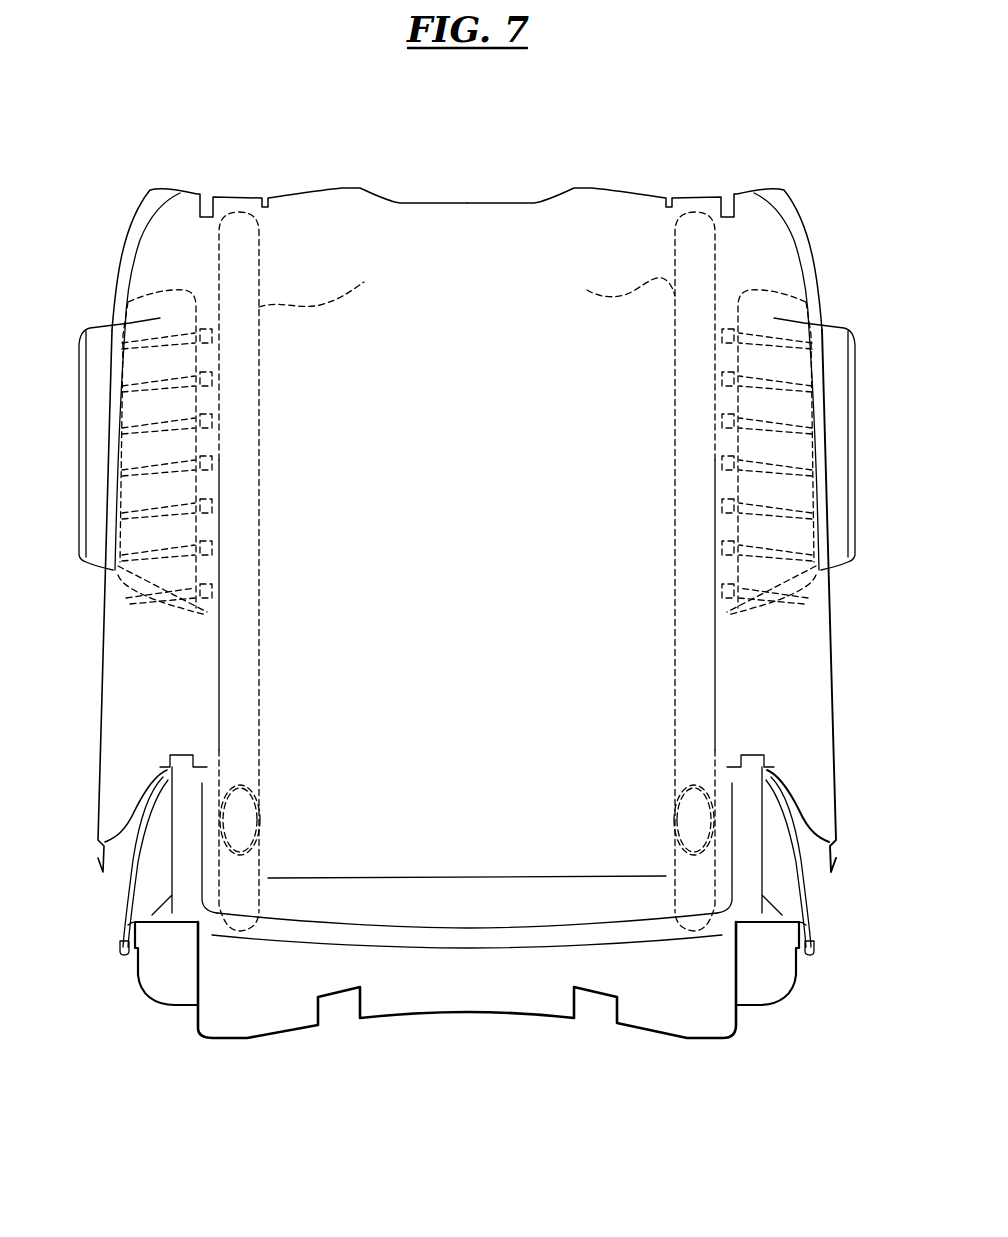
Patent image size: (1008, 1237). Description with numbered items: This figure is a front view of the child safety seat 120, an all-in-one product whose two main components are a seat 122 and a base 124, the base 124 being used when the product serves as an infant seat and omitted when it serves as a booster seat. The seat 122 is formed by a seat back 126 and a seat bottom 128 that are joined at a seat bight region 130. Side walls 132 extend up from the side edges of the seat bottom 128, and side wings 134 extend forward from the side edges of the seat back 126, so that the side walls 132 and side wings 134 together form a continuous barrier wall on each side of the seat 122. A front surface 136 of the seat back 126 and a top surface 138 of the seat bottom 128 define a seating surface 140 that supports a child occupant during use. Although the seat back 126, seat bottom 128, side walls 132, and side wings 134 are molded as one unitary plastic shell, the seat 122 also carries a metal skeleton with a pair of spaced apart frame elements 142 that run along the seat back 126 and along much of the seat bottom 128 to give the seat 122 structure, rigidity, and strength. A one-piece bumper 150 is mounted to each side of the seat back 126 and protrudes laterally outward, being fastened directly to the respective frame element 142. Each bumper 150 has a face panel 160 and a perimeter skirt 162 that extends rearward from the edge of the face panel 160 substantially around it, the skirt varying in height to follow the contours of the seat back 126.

The child safety seat 120 is at (461, 576).
The seat 122 is at (86, 664).
The base 124 is at (750, 1014).
The seat back 126 is at (623, 206).
The seat bottom 128 is at (606, 910).
The seat bight region 130 is at (428, 873).
The side walls 132 is at (222, 667).
The side wings 134 is at (185, 247).
The front surface 136 is at (502, 394).
The top surface 138 is at (376, 917).
The seating surface 140 is at (516, 523).
The frame elements 142 is at (467, 280).
The bumper 150 is at (461, 436).
The face panel 160 is at (80, 372).
The perimeter skirt 162 is at (862, 322).